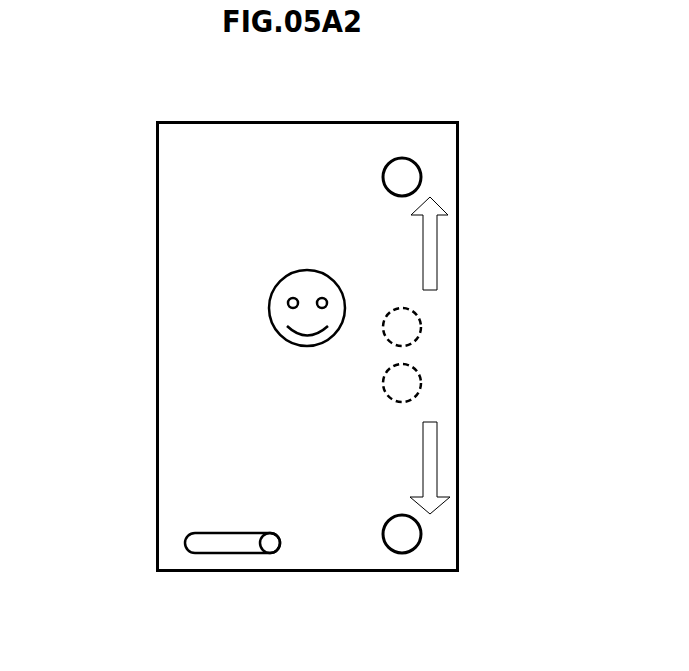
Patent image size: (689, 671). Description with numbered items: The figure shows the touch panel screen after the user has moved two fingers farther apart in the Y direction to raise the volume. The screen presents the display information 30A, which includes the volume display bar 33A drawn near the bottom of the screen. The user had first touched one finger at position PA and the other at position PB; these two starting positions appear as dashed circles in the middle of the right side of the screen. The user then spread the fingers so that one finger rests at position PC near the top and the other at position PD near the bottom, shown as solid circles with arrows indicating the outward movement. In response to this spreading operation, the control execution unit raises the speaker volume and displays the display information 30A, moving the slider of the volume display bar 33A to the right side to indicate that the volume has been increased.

The display information 30A is at (104, 226).
The volume display bar 33A is at (233, 533).
The position PC is at (421, 177).
The position PA is at (421, 327).
The position PB is at (421, 383).
The position PD is at (421, 534).